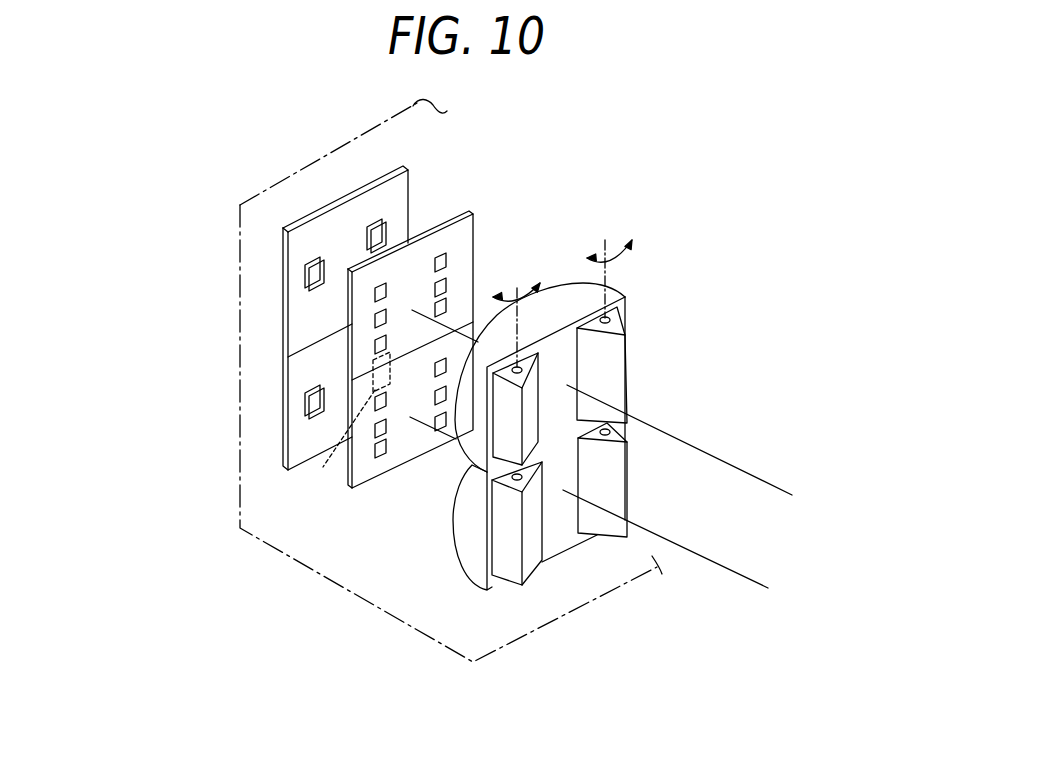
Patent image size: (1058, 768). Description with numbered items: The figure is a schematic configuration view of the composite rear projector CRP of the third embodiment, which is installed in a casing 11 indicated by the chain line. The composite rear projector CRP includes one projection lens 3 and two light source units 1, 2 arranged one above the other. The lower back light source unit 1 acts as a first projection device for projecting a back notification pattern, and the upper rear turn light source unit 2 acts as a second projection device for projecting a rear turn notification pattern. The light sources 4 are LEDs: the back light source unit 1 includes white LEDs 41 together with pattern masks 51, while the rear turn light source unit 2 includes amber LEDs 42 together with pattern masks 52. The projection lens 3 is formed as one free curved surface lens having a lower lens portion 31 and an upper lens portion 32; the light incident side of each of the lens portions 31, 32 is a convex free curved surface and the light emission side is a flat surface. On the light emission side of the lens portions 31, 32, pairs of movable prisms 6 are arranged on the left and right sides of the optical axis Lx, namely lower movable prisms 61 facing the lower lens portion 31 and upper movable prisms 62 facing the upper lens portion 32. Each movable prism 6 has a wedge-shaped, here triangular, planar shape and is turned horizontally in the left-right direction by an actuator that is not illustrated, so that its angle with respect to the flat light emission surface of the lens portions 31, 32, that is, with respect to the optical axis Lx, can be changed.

The back light source unit 1 is at (284, 448).
The rear turn light source unit 2 is at (300, 223).
The projection lens 3 is at (538, 447).
The light source (LED) 4 is at (301, 320).
The movable prism 6 is at (636, 344).
The casing 11 is at (327, 580).
The lower lens portion 31 is at (460, 548).
The upper lens portion 32 is at (563, 305).
The white LED 41 is at (313, 424).
The amber LED 42 is at (320, 255).
The pattern mask 51 is at (392, 432).
The pattern mask 52 is at (388, 287).
The lower movable prism 61 is at (531, 550).
The upper movable prism 62 is at (598, 352).
The optical axis Lx is at (717, 458).
The composite rear projector CRP is at (551, 197).